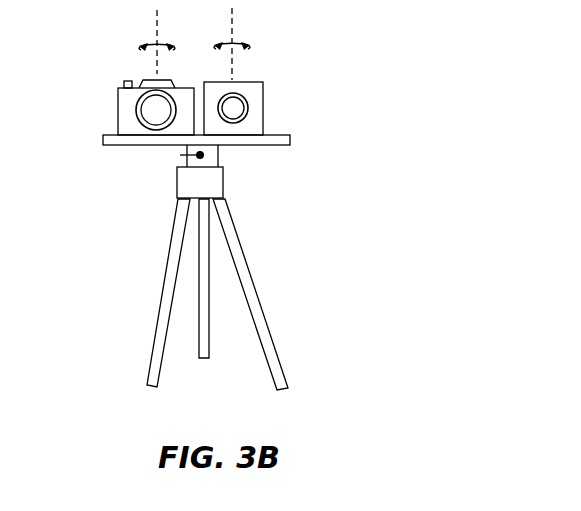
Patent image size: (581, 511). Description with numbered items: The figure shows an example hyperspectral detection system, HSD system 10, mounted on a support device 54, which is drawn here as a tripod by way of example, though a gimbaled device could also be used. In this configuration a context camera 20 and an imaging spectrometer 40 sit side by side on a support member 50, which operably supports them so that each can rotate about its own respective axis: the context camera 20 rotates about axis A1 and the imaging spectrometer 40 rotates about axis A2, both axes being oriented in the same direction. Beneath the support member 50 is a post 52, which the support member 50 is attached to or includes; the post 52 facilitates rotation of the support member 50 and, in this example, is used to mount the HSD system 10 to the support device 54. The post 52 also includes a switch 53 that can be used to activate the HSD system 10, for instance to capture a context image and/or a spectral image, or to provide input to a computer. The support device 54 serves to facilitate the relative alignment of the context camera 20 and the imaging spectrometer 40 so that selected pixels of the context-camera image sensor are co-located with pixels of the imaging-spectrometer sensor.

The HSD system 10 is at (106, 47).
The context camera 20 is at (118, 105).
The imaging spectrometer 40 is at (263, 101).
The support member 50 is at (290, 140).
The post 52 is at (218, 161).
The switch 53 is at (180, 155).
The support device 54 is at (294, 252).
The axis A1 is at (160, 62).
The axis A2 is at (237, 62).